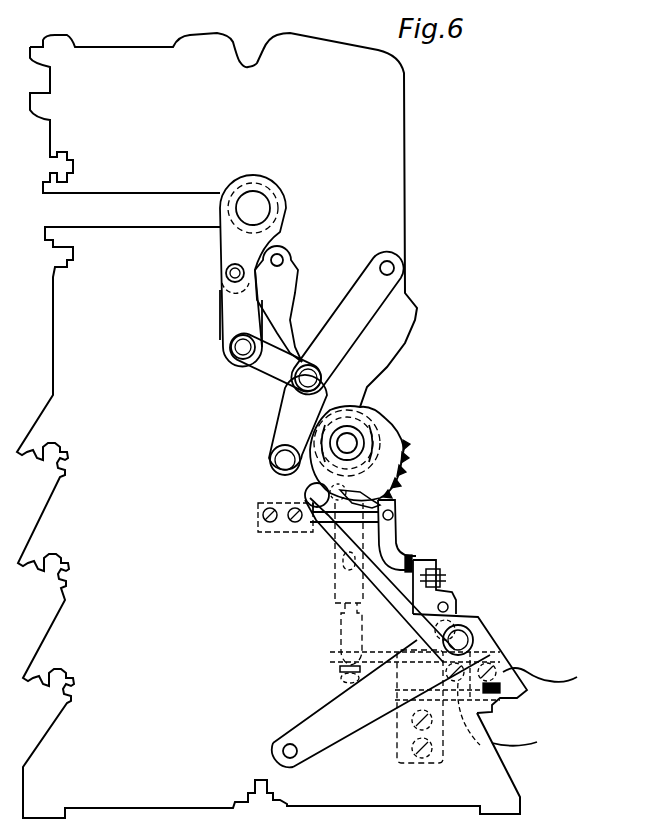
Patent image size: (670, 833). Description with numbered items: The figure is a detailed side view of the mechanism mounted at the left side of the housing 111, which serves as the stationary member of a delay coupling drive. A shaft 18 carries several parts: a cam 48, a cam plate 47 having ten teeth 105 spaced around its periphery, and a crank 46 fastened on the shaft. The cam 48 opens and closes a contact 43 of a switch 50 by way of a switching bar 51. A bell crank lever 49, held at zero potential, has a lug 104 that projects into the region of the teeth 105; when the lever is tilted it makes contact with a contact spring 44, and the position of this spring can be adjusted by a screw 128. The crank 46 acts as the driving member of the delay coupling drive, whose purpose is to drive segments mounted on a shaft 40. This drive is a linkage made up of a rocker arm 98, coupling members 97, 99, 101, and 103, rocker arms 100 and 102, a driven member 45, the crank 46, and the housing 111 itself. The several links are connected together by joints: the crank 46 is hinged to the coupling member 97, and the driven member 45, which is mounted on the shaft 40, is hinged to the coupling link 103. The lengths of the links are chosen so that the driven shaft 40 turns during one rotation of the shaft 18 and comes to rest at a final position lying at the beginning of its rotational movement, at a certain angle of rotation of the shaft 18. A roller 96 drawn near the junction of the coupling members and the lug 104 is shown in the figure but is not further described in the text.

The housing 111 is at (72, 606).
The shaft 40 is at (256, 207).
The driven member 45 is at (243, 243).
The coupling member 103 is at (243, 313).
The rocker arm 102 is at (290, 280).
The coupling member 101 is at (273, 368).
The rocker arm 100 is at (347, 337).
The coupling member 99 is at (290, 431).
The cam plate 47 is at (398, 428).
The crank 46 is at (345, 413).
The shaft 18 is at (350, 443).
The cam 48 is at (400, 480).
The teeth 105 is at (388, 493).
The roller 96 is at (305, 495).
The lug 104 is at (260, 515).
The bell crank lever 49 is at (390, 535).
The contact spring 44 is at (412, 559).
The screw 128 is at (440, 580).
The switch 50 is at (513, 697).
The coupling member 97 is at (330, 533).
The switching bar 51 is at (335, 603).
The contact 43 is at (335, 675).
The rocker arm 98 is at (330, 723).